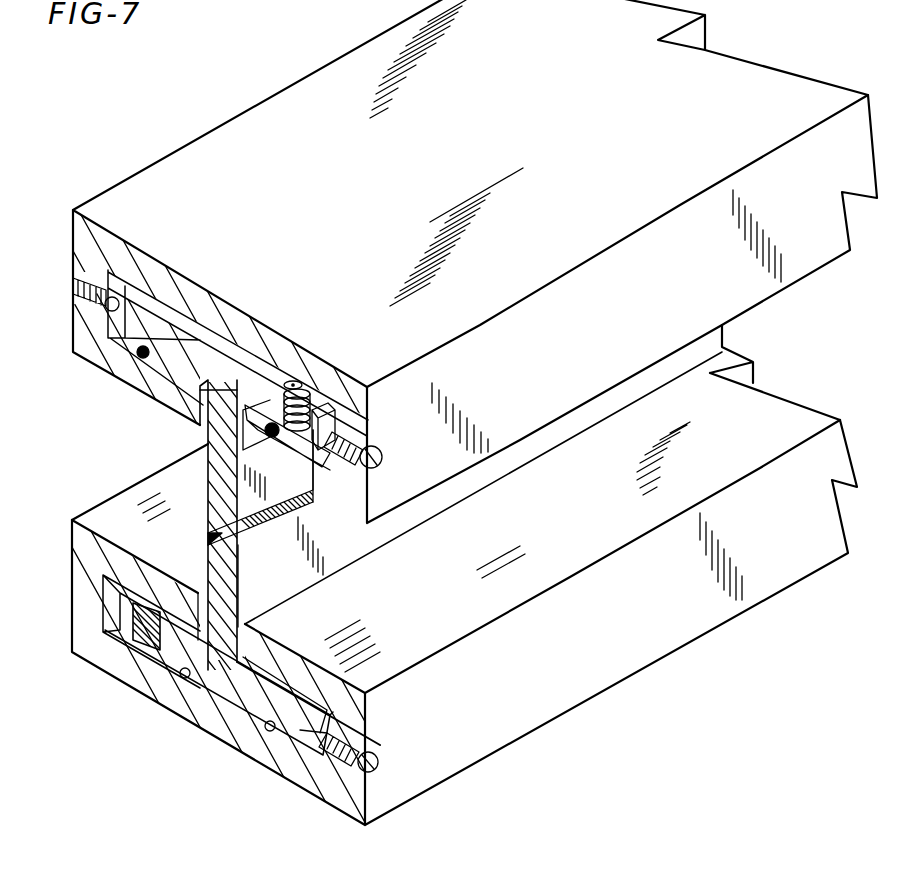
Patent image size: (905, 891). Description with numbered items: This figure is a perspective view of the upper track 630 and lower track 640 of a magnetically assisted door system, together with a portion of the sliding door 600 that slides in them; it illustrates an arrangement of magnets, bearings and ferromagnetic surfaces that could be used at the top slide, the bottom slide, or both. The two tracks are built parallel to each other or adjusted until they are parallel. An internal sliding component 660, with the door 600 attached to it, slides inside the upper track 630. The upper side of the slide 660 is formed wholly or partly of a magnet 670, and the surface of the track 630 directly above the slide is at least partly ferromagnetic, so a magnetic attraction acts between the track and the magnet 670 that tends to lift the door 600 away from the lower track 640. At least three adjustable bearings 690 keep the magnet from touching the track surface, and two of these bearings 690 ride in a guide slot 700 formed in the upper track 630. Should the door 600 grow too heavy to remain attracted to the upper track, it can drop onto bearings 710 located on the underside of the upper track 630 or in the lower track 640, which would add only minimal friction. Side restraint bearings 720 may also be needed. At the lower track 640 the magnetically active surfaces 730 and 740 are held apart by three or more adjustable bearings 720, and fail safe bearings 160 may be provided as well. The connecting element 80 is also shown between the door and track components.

The connecting web 80 is at (205, 372).
The fail safe bearings 160 is at (265, 727).
The sliding door 600 is at (345, 538).
The upper track 630 is at (300, 378).
The lower track 640 is at (160, 562).
The internal sliding component 660 is at (265, 332).
The magnet 670 is at (219, 415).
The adjustable bearings 690 is at (367, 391).
The guide slot 700 is at (352, 372).
The bearings 710 is at (135, 360).
The side restraint bearings 720 is at (72, 285).
The magnetically active surface 730 is at (330, 652).
The magnetically active surface 740 is at (300, 732).